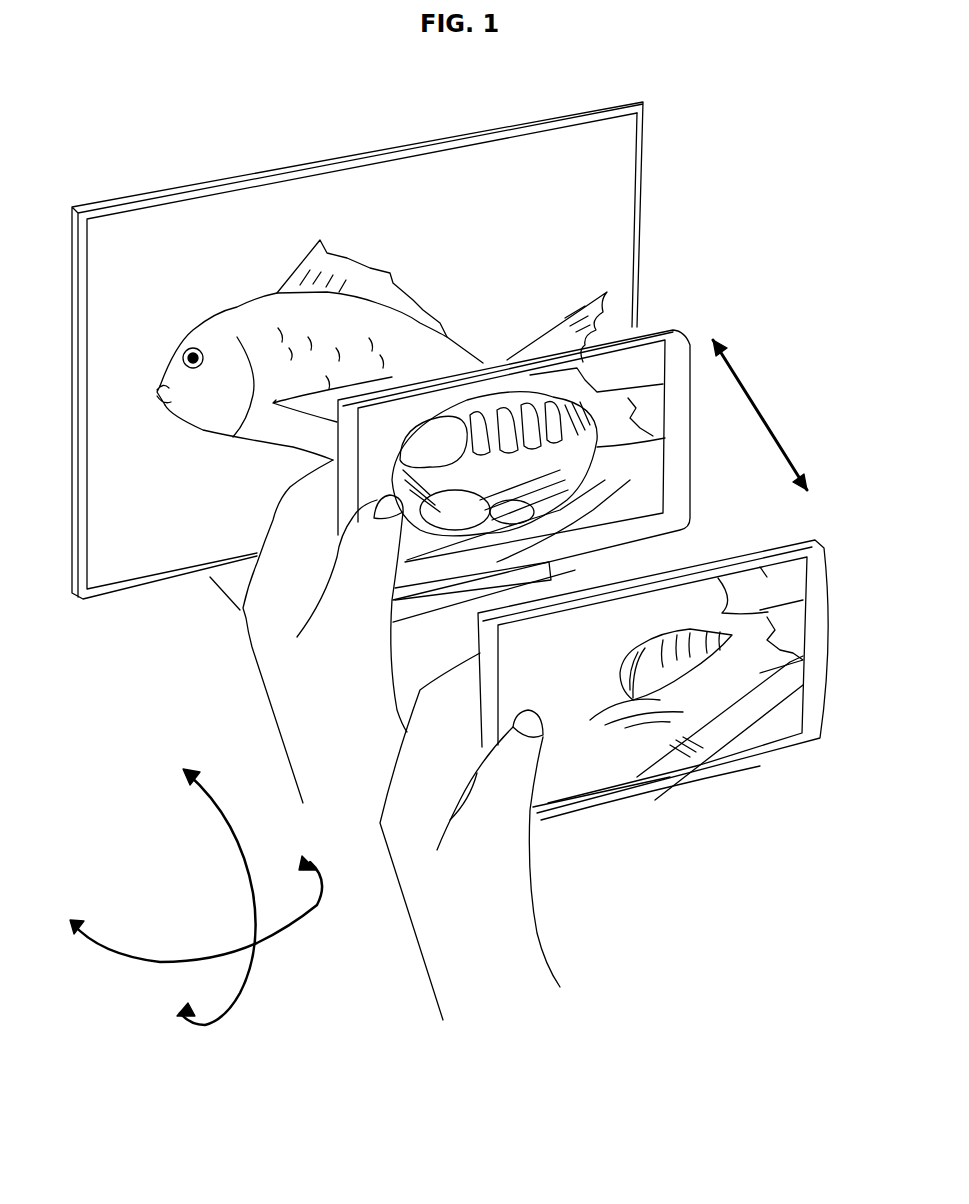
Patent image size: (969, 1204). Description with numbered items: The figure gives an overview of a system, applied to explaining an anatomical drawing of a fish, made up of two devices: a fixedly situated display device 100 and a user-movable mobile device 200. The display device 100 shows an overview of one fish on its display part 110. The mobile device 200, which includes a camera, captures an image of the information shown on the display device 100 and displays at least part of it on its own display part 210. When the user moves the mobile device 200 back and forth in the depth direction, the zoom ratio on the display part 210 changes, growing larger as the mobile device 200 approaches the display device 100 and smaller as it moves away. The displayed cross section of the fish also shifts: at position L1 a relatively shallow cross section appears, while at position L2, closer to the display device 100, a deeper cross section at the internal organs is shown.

The display device 100 is at (395, 335).
The display part 110 is at (617, 158).
The mobile device 200 is at (597, 544).
The display part 210 is at (633, 362).
The position L1 is at (680, 782).
The position L2 is at (686, 452).